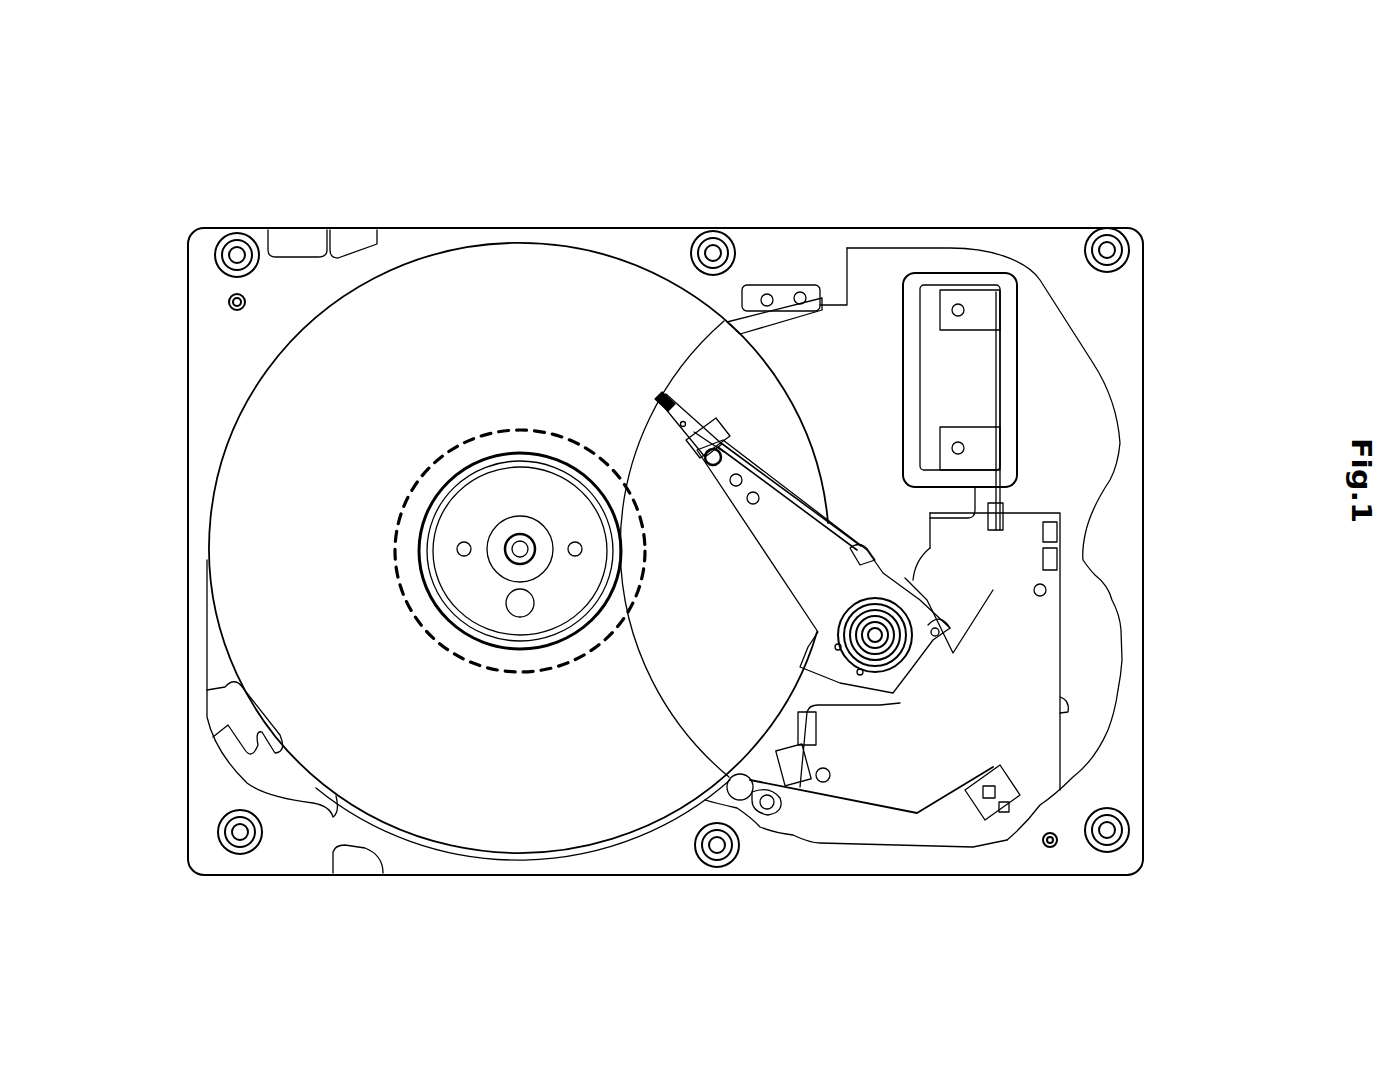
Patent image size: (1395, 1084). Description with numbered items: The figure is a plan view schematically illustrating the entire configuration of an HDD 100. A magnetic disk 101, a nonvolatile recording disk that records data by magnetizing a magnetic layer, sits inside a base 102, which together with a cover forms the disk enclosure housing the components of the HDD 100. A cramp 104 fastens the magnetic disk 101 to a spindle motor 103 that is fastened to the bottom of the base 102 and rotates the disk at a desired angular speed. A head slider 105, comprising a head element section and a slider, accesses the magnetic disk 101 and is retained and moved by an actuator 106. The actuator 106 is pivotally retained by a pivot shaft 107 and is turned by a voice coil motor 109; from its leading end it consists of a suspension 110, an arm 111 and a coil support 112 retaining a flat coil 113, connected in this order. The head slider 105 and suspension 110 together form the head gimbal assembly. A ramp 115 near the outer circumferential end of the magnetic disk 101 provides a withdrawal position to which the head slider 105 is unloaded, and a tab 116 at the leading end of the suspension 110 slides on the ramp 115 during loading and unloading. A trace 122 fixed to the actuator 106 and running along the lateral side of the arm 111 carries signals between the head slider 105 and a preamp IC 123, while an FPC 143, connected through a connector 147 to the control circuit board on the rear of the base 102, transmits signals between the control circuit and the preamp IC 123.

The HDD 100 is at (926, 182).
The magnetic disk 101 is at (207, 633).
The base 102 is at (187, 362).
The spindle motor 103 is at (537, 670).
The cramp 104 is at (515, 452).
The head slider 105 is at (655, 399).
The actuator 106 is at (842, 510).
The pivot shaft 107 is at (807, 670).
The voice coil motor 109 is at (1097, 633).
The suspension 110 is at (690, 440).
The arm 111 is at (748, 538).
The coil support 112 is at (1123, 677).
The flat coil 113 is at (918, 703).
The ramp 115 is at (770, 337).
The tab 116 is at (660, 395).
The trace 122 is at (757, 470).
The preamp IC 123 is at (893, 568).
The FPC 143 is at (935, 520).
The connector 147 is at (903, 310).